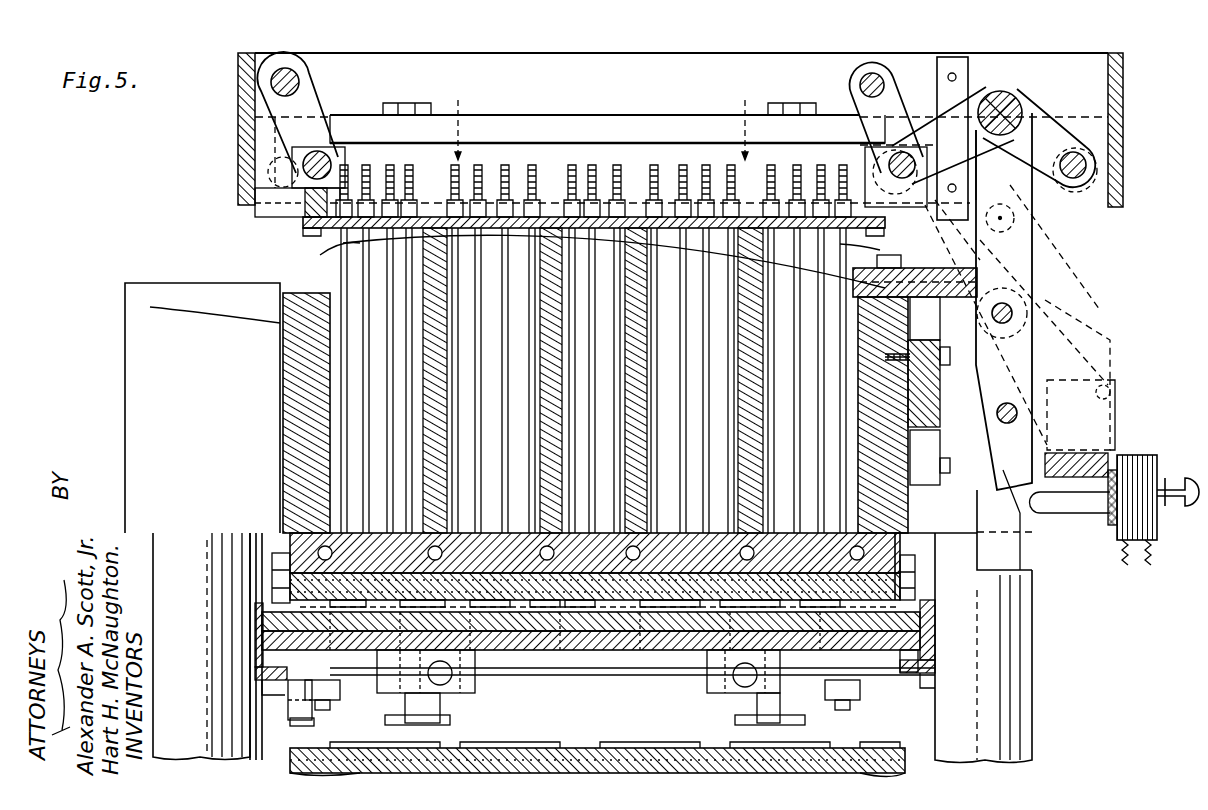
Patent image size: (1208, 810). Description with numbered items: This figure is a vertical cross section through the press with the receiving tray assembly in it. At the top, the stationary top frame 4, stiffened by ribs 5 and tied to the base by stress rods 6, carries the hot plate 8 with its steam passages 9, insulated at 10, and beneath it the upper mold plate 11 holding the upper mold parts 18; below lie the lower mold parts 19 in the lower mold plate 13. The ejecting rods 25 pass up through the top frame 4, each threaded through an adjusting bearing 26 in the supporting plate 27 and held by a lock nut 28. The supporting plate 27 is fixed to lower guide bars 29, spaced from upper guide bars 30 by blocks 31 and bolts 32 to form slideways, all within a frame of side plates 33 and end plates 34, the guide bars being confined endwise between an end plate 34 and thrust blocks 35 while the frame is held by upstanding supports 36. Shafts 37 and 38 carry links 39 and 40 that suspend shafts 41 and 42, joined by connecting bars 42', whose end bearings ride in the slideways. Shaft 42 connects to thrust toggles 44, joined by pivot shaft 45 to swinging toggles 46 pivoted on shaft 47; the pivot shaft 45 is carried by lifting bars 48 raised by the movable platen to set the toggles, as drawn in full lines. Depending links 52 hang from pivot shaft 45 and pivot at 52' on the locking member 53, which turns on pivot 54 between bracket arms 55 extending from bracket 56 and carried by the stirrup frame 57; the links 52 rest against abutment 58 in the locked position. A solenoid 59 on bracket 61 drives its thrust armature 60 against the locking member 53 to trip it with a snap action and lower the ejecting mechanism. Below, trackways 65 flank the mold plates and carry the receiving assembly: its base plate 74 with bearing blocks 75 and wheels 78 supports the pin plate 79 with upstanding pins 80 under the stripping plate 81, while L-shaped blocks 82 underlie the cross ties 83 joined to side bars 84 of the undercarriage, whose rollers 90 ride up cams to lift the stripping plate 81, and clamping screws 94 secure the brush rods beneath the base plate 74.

The top frame 4 is at (150, 307).
The ribs 5 is at (545, 318).
The stress rods 6 is at (160, 562).
The hot plate 8 is at (262, 548).
The steam passages 9 is at (905, 548).
The insulation 10 is at (300, 540).
The mold plate 11 is at (275, 580).
The lower mold plate 13 is at (290, 760).
The upper mold parts 18 is at (643, 607).
The lower mold parts 19 is at (560, 734).
The rods 25 is at (390, 378).
The adjusting bearing 26 is at (560, 198).
The supporting plate 27 is at (310, 222).
The lock nut 28 is at (426, 198).
The lower guide bars 29 is at (262, 208).
The upper guide bars 30 is at (470, 125).
The blocks 31 is at (595, 120).
The bolts 32 is at (415, 103).
The side plates 33 is at (632, 50).
The end plates 34 is at (238, 133).
The thrust blocks 35 is at (998, 90).
The upstanding supports 36 is at (328, 250).
The shaft 37 is at (287, 68).
The shaft 38 is at (875, 73).
The links 39 is at (310, 92).
The links 40 is at (893, 95).
The shaft 41 is at (303, 165).
The shaft 42 is at (866, 162).
The connecting bars 42' is at (650, 145).
The thrust toggles 44 is at (968, 100).
The pivot shaft 45 is at (972, 137).
The swinging toggles 46 is at (1050, 120).
The shaft 47 is at (1076, 152).
The lifting bars 48 is at (1015, 555).
The depending links 52 is at (1016, 315).
The pivot 52' is at (1047, 319).
The locking member 53 is at (1012, 370).
The pivot 54 is at (1018, 413).
The bracket arms 55 is at (1115, 420).
The bracket 56 is at (935, 342).
The stirrup frame 57 is at (1108, 460).
The abutment 58 is at (958, 268).
The solenoid 59 is at (1160, 472).
The thrust armature 60 is at (1192, 510).
The bracket 61 is at (1120, 562).
The trackways 65 is at (262, 692).
The base plate 74 is at (672, 678).
The bearing blocks 75 is at (300, 690).
The wheels 78 is at (255, 655).
The pin plate 79 is at (548, 650).
The pins 80 is at (583, 650).
The stripping plate 81 is at (262, 622).
The L-shaped supporting blocks 82 is at (405, 678).
The cross ties 83 is at (668, 650).
The side bars 84 is at (335, 700).
The rollers 90 is at (295, 722).
The clamping screws 94 is at (435, 718).